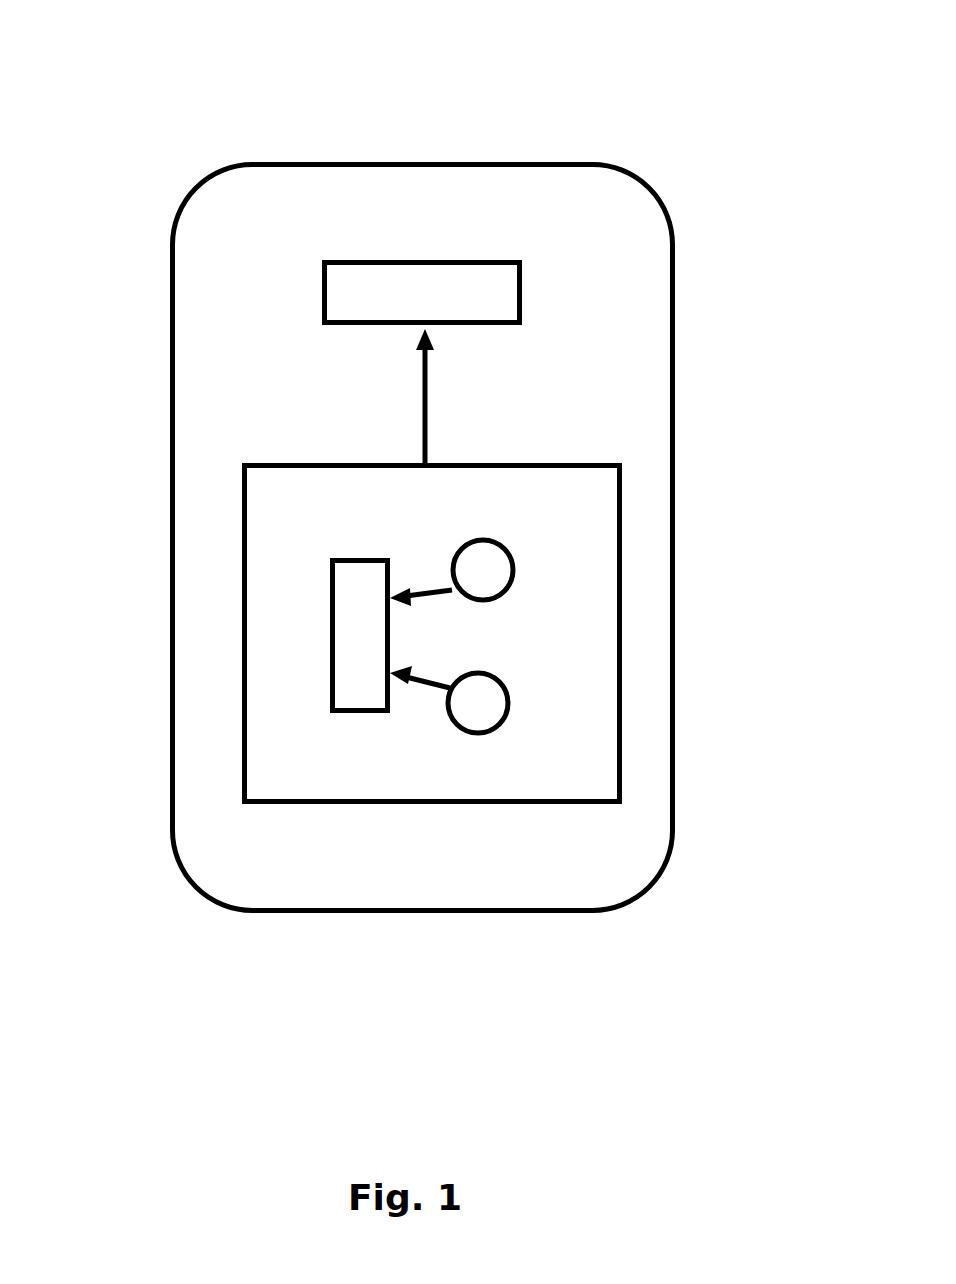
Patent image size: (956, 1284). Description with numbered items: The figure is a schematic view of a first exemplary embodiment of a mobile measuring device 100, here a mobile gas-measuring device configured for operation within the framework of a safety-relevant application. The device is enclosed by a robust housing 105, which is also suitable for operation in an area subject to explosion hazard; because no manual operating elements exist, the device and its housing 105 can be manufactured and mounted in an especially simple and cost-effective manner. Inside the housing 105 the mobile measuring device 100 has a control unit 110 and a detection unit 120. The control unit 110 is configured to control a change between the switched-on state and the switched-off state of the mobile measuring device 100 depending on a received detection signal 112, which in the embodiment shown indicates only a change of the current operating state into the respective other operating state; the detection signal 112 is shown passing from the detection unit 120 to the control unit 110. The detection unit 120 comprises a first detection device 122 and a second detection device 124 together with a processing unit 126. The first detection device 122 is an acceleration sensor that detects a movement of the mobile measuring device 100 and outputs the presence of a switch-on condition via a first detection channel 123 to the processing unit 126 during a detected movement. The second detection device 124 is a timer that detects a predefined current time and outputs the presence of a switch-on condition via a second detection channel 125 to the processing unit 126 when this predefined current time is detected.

The mobile measuring device 100 is at (679, 114).
The housing 105 is at (675, 345).
The control unit 110 is at (322, 297).
The detection signal 112 is at (425, 382).
The detection unit 120 is at (245, 538).
The first detection device 122 is at (513, 580).
The first detection channel 123 is at (443, 595).
The second detection device 124 is at (478, 735).
The second detection channel 125 is at (414, 692).
The processing unit 126 is at (330, 667).